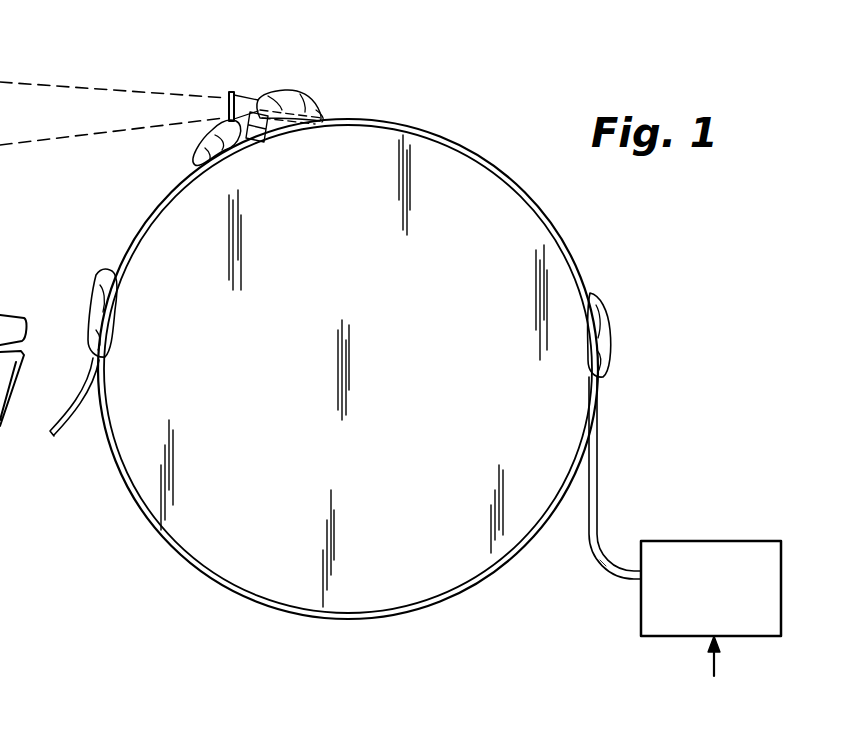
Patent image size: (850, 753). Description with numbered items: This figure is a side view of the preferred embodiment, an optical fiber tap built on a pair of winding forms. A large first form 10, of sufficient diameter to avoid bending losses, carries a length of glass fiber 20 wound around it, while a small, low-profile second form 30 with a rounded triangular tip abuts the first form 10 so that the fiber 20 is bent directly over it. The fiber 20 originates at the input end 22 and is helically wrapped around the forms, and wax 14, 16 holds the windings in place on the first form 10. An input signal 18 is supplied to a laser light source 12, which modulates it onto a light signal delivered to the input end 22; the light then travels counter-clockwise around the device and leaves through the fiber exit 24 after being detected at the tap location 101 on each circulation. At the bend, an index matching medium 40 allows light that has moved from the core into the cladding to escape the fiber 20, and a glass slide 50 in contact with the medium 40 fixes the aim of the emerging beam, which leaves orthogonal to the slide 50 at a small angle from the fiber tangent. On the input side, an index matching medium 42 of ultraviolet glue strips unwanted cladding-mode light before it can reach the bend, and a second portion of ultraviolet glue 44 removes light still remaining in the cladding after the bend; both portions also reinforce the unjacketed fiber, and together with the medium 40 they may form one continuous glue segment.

The first form 10 is at (535, 243).
The laser light source 12 is at (723, 541).
The wax 14 is at (610, 324).
The wax 16 is at (100, 279).
The input signal 18 is at (718, 661).
The glass fiber 20 is at (597, 465).
The input end 22 is at (608, 566).
The fiber exit 24 is at (55, 432).
The second form 30 is at (263, 142).
The index matching medium 40 is at (272, 98).
The index matching medium 42 is at (320, 112).
The ultraviolet glue 44 is at (205, 137).
The glass slide 50 is at (236, 94).
The tap location 101 is at (227, 93).